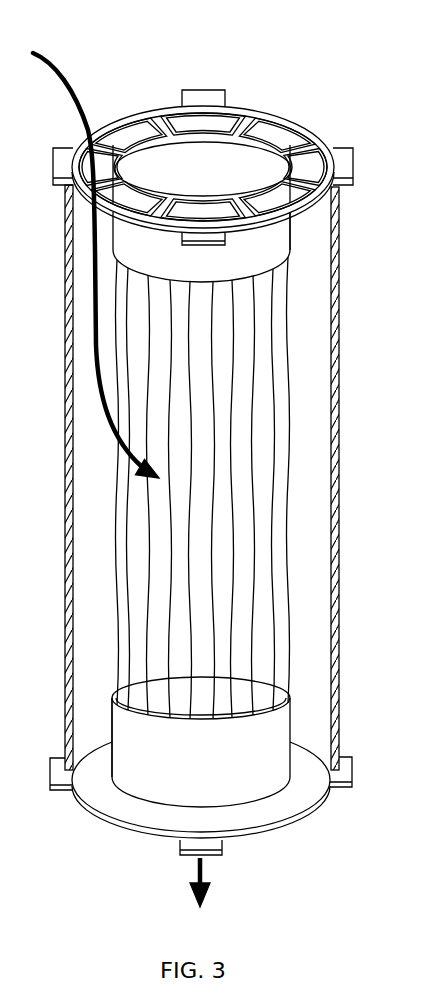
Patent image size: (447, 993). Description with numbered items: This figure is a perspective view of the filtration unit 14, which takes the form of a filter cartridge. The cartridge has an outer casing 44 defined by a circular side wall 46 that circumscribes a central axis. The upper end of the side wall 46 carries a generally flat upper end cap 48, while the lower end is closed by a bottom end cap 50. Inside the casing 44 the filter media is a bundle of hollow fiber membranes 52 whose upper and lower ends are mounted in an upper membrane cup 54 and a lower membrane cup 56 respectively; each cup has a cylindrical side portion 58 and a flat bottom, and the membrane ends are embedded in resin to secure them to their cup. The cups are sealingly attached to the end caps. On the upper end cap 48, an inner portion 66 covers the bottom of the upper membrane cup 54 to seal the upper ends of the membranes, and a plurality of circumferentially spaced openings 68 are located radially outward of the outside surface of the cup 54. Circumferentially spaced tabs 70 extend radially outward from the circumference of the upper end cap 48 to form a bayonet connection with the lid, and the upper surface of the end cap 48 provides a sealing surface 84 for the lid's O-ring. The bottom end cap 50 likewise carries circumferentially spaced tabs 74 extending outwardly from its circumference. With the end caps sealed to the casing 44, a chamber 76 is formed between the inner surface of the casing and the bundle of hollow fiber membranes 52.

The filtration unit 14 is at (233, 477).
The outer casing 44 is at (366, 478).
The circular side wall 46 is at (334, 463).
The upper end cap 48 is at (213, 135).
The bottom end cap 50 is at (205, 786).
The hollow fiber membranes 52 is at (292, 559).
The upper membrane cup 54 is at (275, 233).
The lower membrane cup 56 is at (287, 712).
The cylindrical side portion 58 is at (253, 257).
The inner portion 66 is at (168, 167).
The circumferentially spaced openings 68 is at (227, 128).
The circumferentially spaced tabs 70 is at (202, 96).
The circumferentially spaced tabs 74 is at (341, 762).
The chamber 76 is at (83, 485).
The sealing surface 84 is at (333, 130).